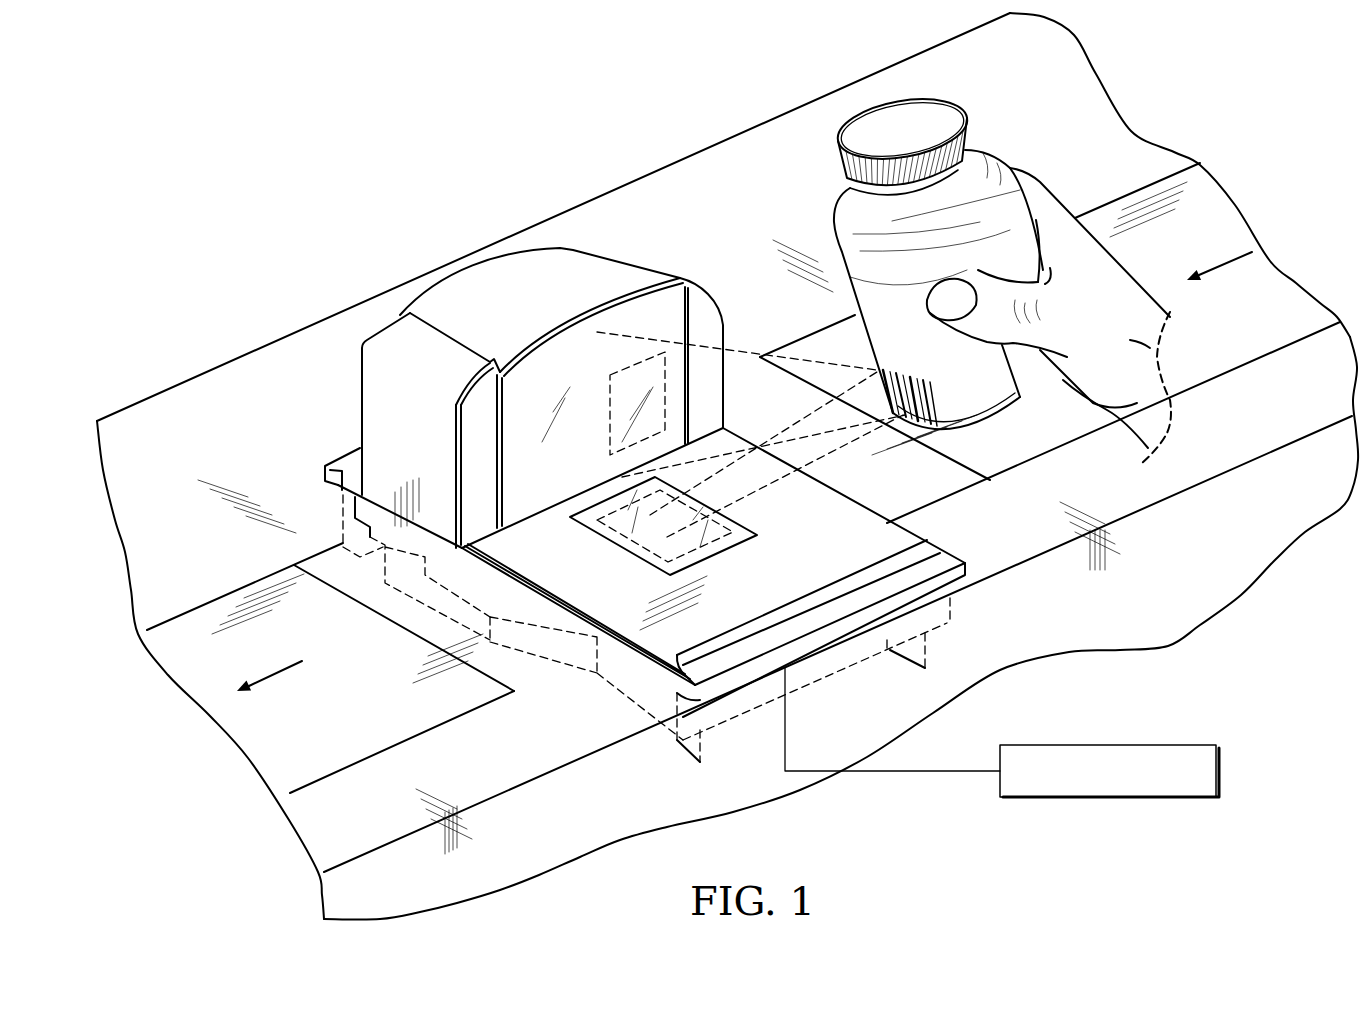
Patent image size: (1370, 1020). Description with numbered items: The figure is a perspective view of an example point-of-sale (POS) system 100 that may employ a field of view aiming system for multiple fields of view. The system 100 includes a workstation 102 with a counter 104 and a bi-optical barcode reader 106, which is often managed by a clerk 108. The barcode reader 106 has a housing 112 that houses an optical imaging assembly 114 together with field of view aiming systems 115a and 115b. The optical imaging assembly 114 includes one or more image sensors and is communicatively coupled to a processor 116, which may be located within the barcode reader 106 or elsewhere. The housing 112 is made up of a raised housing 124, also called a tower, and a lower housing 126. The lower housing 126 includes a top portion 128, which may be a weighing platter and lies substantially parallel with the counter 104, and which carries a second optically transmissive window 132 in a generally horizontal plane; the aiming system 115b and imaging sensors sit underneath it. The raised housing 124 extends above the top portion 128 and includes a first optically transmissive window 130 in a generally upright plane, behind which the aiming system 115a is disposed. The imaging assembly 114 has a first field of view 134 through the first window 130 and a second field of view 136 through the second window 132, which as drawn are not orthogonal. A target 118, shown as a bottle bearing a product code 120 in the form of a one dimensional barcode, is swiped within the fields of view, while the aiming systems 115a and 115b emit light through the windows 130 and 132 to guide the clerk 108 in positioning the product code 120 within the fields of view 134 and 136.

The point-of-sale (POS) system 100 is at (160, 136).
The workstation 102 is at (683, 122).
The counter 104 is at (1063, 52).
The bi-optical barcode reader 106 is at (370, 422).
The clerk 108 is at (1133, 343).
The housing 112 is at (397, 389).
The optical imaging assembly 114 is at (507, 472).
The first field of view aiming system 115a is at (667, 387).
The second field of view aiming system 115b is at (687, 553).
The processor 116 is at (1221, 770).
The target 118 is at (1010, 212).
The product code 120 is at (931, 398).
The raised housing 124 is at (435, 261).
The lower housing 126 is at (640, 761).
The top portion 128 is at (661, 640).
The first optically transmissive window 130 is at (571, 360).
The second optically transmissive window 132 is at (747, 538).
The first field of view 134 is at (642, 336).
The second field of view 136 is at (853, 452).